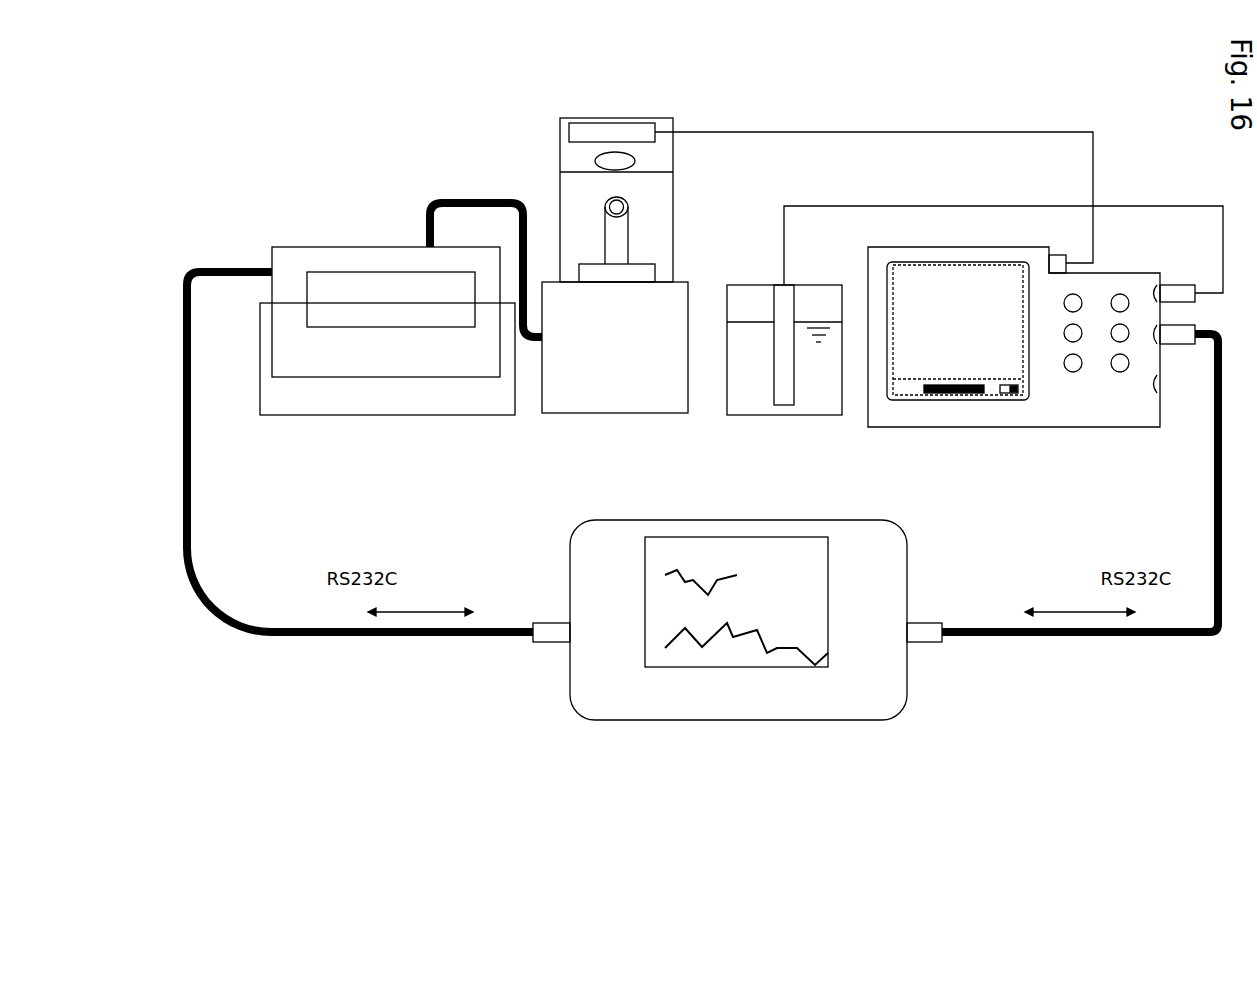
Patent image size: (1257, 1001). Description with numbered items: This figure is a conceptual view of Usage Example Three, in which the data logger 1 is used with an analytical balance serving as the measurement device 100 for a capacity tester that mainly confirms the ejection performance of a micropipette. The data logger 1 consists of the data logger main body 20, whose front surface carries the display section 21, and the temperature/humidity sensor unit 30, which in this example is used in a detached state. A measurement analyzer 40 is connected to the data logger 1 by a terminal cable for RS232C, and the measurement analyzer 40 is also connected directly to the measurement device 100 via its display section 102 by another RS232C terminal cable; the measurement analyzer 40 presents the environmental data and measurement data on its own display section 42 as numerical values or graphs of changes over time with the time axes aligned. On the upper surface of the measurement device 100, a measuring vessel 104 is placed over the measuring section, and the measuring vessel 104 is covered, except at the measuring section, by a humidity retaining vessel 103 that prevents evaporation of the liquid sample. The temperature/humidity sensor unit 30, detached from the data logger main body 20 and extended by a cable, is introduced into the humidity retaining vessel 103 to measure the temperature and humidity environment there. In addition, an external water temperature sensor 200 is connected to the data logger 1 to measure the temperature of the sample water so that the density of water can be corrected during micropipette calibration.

The data logger 1 is at (1031, 369).
The data logger main body 20 is at (1031, 337).
The display section 21 is at (963, 395).
The temperature/humidity sensor unit 30 is at (607, 130).
The measurement analyzer 40 is at (737, 647).
The display section 42 is at (722, 655).
The measurement device 100 is at (615, 403).
The display section 102 is at (388, 327).
The humidity retaining vessel 103 is at (658, 176).
The measuring vessel 104 is at (622, 230).
The external water temperature sensor 200 is at (788, 296).